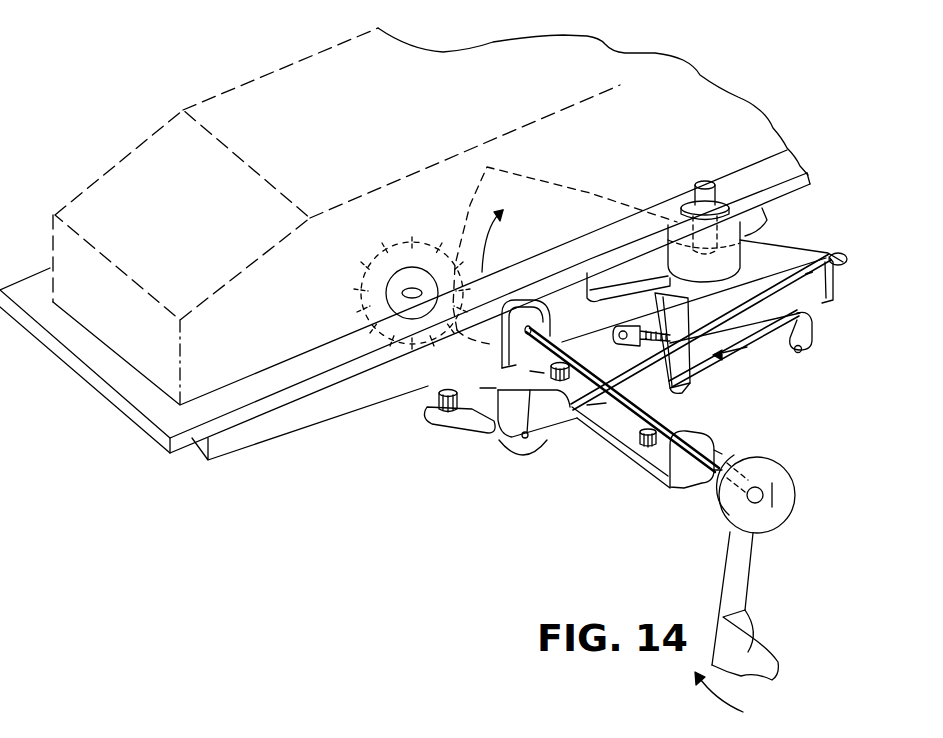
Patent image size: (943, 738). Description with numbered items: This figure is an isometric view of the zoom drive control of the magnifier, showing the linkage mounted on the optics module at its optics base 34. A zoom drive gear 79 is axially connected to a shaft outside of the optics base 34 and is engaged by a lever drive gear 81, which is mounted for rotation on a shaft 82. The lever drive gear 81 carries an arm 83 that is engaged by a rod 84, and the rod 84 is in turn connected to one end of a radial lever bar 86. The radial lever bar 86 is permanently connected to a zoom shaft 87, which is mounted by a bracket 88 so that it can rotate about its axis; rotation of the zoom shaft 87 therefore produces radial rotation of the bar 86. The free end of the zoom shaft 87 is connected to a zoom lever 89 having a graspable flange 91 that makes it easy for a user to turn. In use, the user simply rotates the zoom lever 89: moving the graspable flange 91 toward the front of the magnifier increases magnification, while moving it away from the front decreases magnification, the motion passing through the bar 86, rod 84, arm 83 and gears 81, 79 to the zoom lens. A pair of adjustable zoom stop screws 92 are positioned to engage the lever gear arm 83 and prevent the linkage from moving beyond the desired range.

The optics base 34 is at (275, 424).
The zoom drive gear 79 is at (400, 233).
The lever drive gear 81 is at (600, 173).
The shaft 82 is at (700, 176).
The arm 83 is at (762, 248).
The rod 84 is at (670, 370).
The radial lever bar 86 is at (457, 378).
The zoom shaft 87 is at (660, 412).
The bracket 88 is at (661, 487).
The zoom lever 89 is at (793, 497).
The graspable flange 91 is at (763, 634).
The zoom stop screws 92 is at (634, 347).